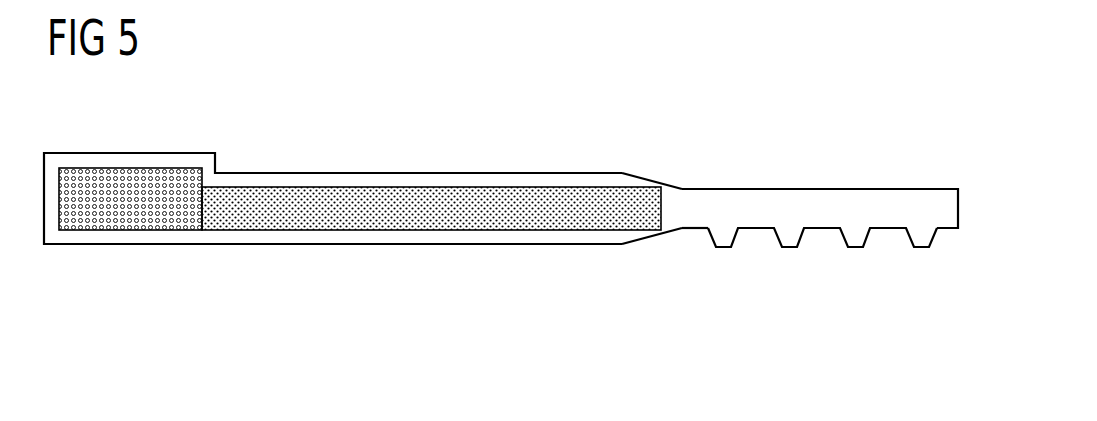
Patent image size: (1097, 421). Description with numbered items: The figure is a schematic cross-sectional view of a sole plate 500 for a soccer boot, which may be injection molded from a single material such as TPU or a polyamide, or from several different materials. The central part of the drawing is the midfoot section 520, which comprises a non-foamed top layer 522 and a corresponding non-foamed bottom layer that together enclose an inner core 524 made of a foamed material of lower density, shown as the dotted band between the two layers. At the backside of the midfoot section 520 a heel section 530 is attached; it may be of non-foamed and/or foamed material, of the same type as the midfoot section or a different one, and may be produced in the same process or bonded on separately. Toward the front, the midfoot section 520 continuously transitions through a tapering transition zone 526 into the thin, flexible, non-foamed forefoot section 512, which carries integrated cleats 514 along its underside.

The sole plate 500 is at (284, 80).
The midfoot section 520 is at (296, 271).
The non-foamed top layer 522 is at (412, 175).
The inner core 524 is at (320, 205).
The transition zone 526 is at (650, 203).
The heel section 530 is at (126, 178).
The forefoot section 512 is at (813, 200).
The integrated cleats 514 is at (788, 243).